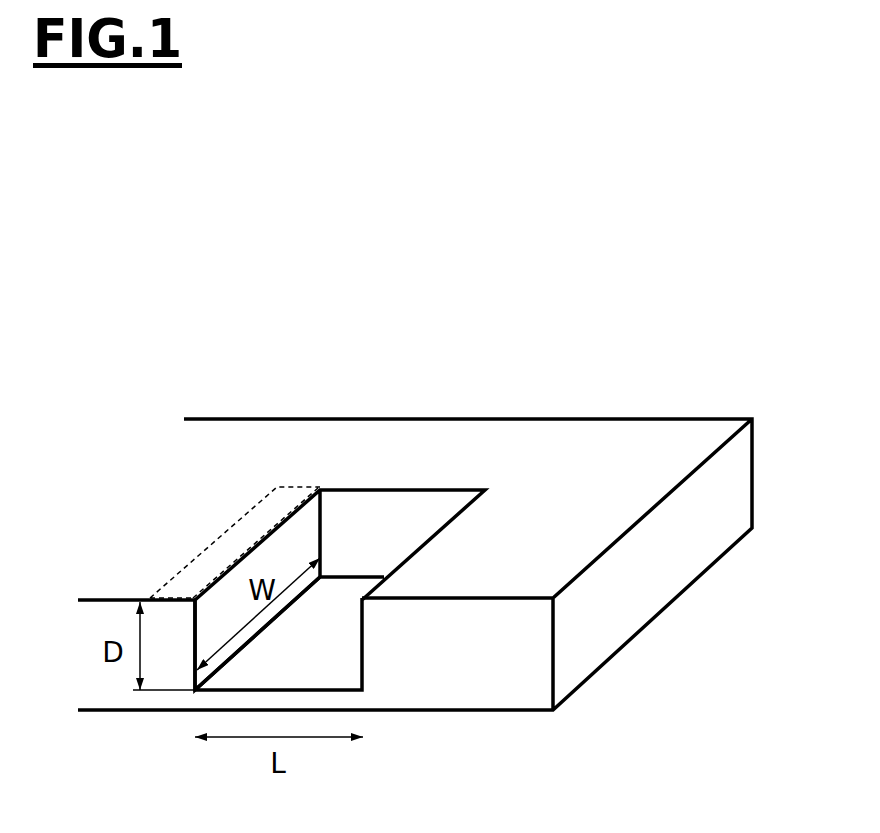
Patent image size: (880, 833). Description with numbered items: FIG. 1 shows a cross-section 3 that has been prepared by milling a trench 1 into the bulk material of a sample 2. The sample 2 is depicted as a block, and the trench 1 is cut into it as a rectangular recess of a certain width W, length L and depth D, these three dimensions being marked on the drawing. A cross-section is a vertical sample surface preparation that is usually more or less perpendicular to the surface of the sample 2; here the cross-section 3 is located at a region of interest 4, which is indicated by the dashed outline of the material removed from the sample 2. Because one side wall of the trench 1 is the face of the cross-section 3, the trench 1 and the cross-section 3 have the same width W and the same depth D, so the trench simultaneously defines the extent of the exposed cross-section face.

The trench 1 is at (382, 500).
The sample 2 is at (637, 435).
The cross-section 3 is at (205, 637).
The region of interest 4 is at (237, 537).